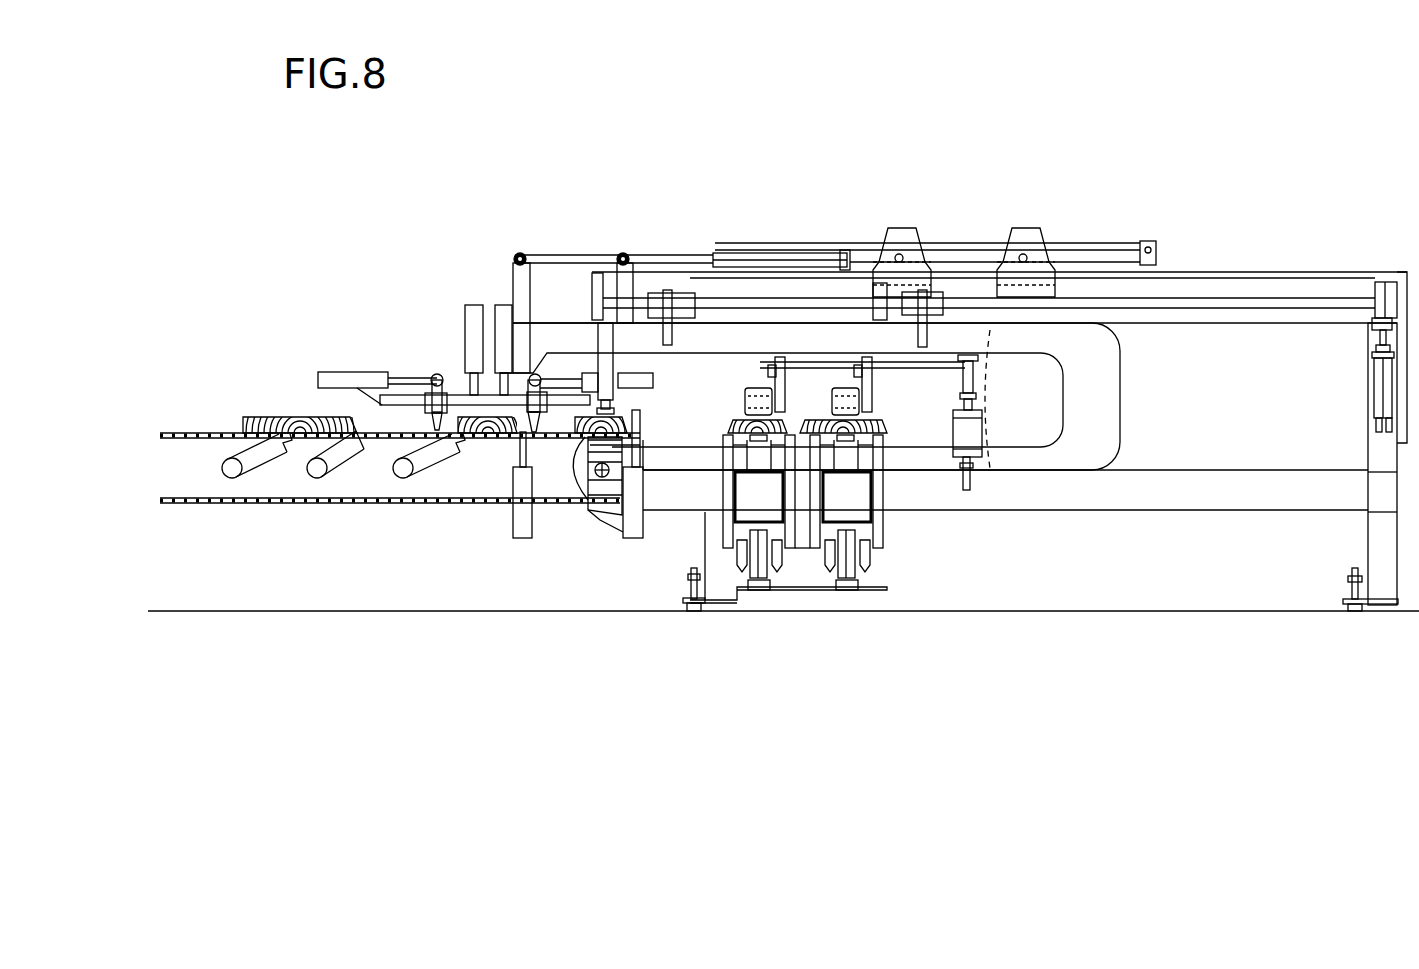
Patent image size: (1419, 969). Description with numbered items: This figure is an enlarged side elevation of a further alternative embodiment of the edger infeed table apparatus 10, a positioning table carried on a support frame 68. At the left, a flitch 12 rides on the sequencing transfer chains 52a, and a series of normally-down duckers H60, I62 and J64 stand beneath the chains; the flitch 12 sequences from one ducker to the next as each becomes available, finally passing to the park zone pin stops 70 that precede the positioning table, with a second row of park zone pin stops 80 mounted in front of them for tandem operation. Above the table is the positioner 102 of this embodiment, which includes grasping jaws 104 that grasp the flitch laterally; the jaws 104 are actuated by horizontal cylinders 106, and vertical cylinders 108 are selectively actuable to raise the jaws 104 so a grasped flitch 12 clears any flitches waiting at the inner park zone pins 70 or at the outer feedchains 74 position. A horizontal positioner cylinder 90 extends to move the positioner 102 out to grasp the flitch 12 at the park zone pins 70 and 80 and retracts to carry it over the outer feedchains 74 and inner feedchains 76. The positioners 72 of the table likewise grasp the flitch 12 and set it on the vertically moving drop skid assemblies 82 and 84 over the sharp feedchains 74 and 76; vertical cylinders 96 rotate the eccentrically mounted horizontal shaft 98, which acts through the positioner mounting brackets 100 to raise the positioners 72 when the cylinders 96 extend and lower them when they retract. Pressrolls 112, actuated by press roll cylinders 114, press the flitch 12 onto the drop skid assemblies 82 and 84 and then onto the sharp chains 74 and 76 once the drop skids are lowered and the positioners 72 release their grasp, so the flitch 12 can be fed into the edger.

The edger infeed table apparatus 10 is at (786, 178).
The flitch 12 is at (290, 422).
The sequencing transfer chains 52a is at (175, 432).
The ducker H60 is at (250, 460).
The ducker I62 is at (333, 457).
The ducker J64 is at (427, 467).
The support frame 68 is at (1350, 278).
The park zone pin stops 70 is at (637, 433).
The positioners 72 is at (1100, 398).
The outer feedchains 74 is at (750, 447).
The inner feedchains 76 is at (857, 447).
The park zone pin stops 80 is at (533, 453).
The drop skid assembly 82 is at (780, 447).
The drop skid assembly 84 is at (867, 447).
The horizontal positioner cylinders 90 is at (1120, 252).
The vertical cylinders 96 is at (1380, 402).
The eccentrically mounted horizontal shaft 98 is at (1212, 302).
The positioner mounting brackets 100 is at (694, 320).
The positioner 102 is at (556, 337).
The grasping jaws 104 is at (533, 420).
The horizontal cylinders 106 is at (348, 376).
The vertical cylinders 108 is at (505, 322).
The pressrolls 112 is at (747, 387).
The press roll cylinders 114 is at (970, 455).